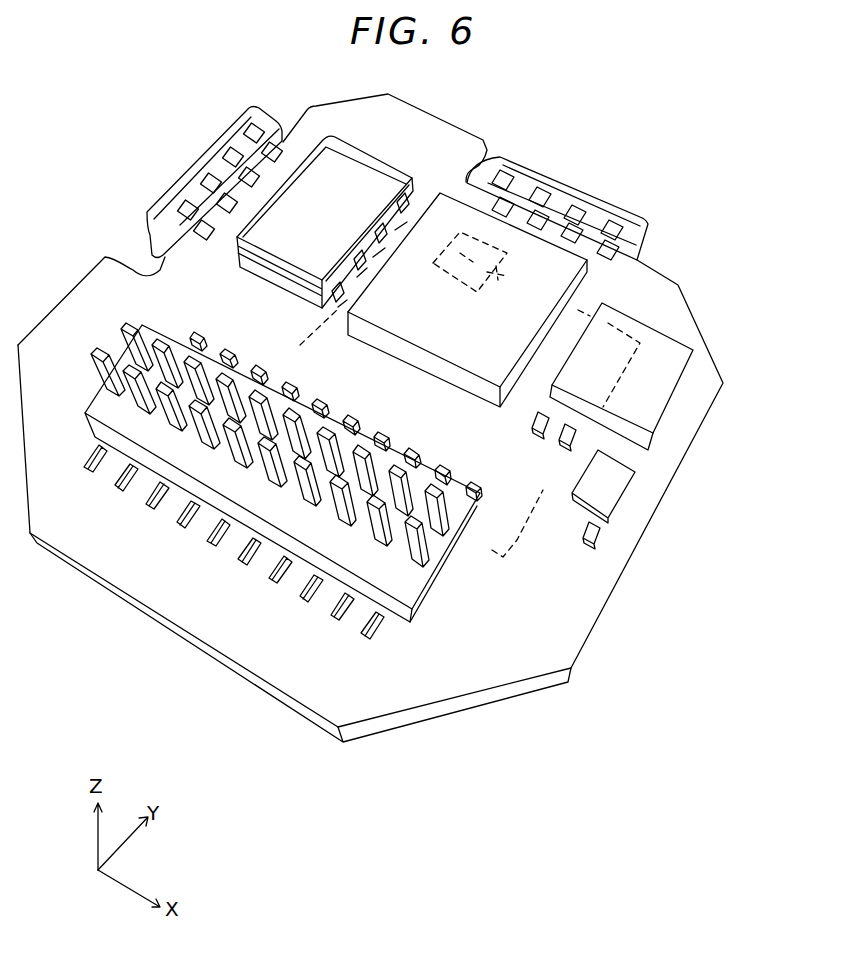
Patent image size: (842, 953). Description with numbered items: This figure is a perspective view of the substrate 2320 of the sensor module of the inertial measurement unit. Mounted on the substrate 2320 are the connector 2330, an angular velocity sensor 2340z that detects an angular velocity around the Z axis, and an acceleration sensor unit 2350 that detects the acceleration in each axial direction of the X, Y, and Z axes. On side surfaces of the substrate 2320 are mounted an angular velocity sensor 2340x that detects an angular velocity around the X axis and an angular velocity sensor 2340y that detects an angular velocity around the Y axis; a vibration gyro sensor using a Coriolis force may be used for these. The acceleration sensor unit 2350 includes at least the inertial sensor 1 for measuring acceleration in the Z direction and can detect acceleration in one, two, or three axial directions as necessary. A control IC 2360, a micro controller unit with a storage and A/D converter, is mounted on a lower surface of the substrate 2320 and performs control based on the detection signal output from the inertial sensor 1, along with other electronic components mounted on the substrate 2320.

The inertial sensor 1 is at (478, 232).
The substrate 2320 is at (580, 632).
The connector 2330 is at (423, 581).
The angular velocity sensor 2340x is at (210, 168).
The angular velocity sensor 2340y is at (570, 197).
The angular velocity sensor 2340z is at (350, 170).
The acceleration sensor unit 2350 is at (522, 285).
The control IC 2360 is at (522, 528).